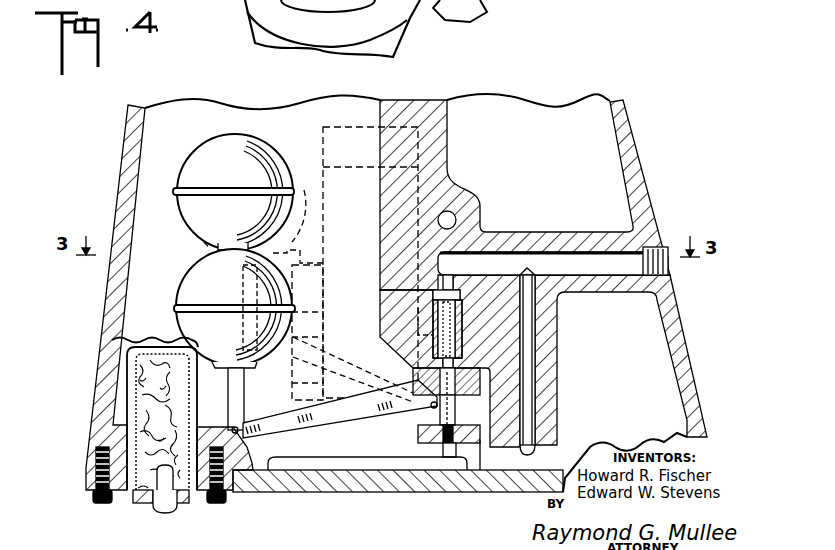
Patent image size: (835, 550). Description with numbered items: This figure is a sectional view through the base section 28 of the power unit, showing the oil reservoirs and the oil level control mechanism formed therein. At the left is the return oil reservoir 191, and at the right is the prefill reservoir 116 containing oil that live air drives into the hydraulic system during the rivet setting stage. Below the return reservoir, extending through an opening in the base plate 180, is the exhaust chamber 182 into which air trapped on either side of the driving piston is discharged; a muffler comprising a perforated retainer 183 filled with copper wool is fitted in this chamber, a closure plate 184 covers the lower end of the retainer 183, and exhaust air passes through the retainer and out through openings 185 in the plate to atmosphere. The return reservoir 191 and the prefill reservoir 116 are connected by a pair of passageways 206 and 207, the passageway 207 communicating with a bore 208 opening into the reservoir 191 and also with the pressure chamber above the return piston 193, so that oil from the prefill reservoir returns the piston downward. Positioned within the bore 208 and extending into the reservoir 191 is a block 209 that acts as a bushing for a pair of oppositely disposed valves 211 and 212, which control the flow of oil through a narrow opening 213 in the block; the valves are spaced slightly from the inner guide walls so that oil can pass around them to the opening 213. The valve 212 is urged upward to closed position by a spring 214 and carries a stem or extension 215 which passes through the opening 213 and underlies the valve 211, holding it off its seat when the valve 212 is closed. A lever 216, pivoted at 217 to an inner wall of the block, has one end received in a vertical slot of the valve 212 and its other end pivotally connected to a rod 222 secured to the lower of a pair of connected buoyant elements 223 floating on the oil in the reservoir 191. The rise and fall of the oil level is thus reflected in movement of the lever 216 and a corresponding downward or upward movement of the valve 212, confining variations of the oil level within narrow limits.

The base section 28 is at (668, 132).
The prefill reservoir 116 is at (653, 348).
The base plate 180 is at (280, 493).
The exhaust chamber 182 is at (115, 339).
The perforated retainer 183 is at (127, 372).
The closure plate 184 is at (127, 503).
The openings 185 is at (147, 507).
The return oil reservoir 191 is at (148, 138).
The return piston 193 is at (343, 168).
The passageway 206 is at (532, 390).
The passageway 207 is at (588, 262).
The bore 208 is at (433, 296).
The block 209 is at (418, 366).
The valve 211 is at (468, 298).
The valve 212 is at (472, 422).
The narrow opening 213 is at (413, 393).
The spring 214 is at (467, 440).
The stem or extension 215 is at (462, 353).
The lever 216 is at (338, 352).
The pivot 217 is at (437, 410).
The rod 222 is at (248, 290).
The buoyant elements 223 is at (190, 223).